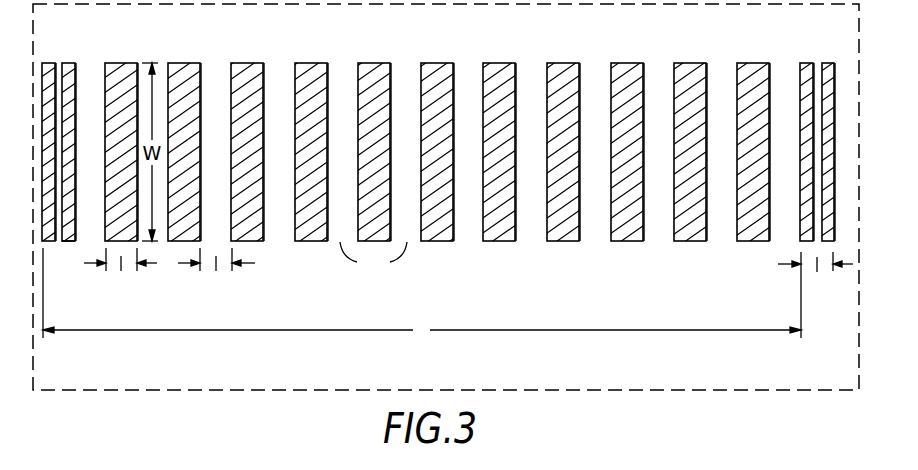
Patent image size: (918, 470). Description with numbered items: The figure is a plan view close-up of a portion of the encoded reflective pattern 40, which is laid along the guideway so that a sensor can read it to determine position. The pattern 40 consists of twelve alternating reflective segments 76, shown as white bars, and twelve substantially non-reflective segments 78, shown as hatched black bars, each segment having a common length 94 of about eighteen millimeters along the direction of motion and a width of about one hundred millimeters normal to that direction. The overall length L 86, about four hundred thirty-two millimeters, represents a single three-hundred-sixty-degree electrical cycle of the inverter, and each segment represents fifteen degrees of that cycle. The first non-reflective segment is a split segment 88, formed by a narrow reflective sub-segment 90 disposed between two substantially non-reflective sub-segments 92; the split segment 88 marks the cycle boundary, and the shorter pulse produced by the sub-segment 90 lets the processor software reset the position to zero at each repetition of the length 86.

The reflective pattern 40 is at (479, 307).
The reflective segments 76 is at (373, 260).
The substantially non-reflective segments 78 is at (307, 245).
The length L 86 is at (418, 345).
The split segment 88 is at (66, 247).
The reflective sub-segment 90 is at (60, 63).
The substantially non-reflective sub-segments 92 is at (48, 63).
The length of segment 94 is at (132, 272).